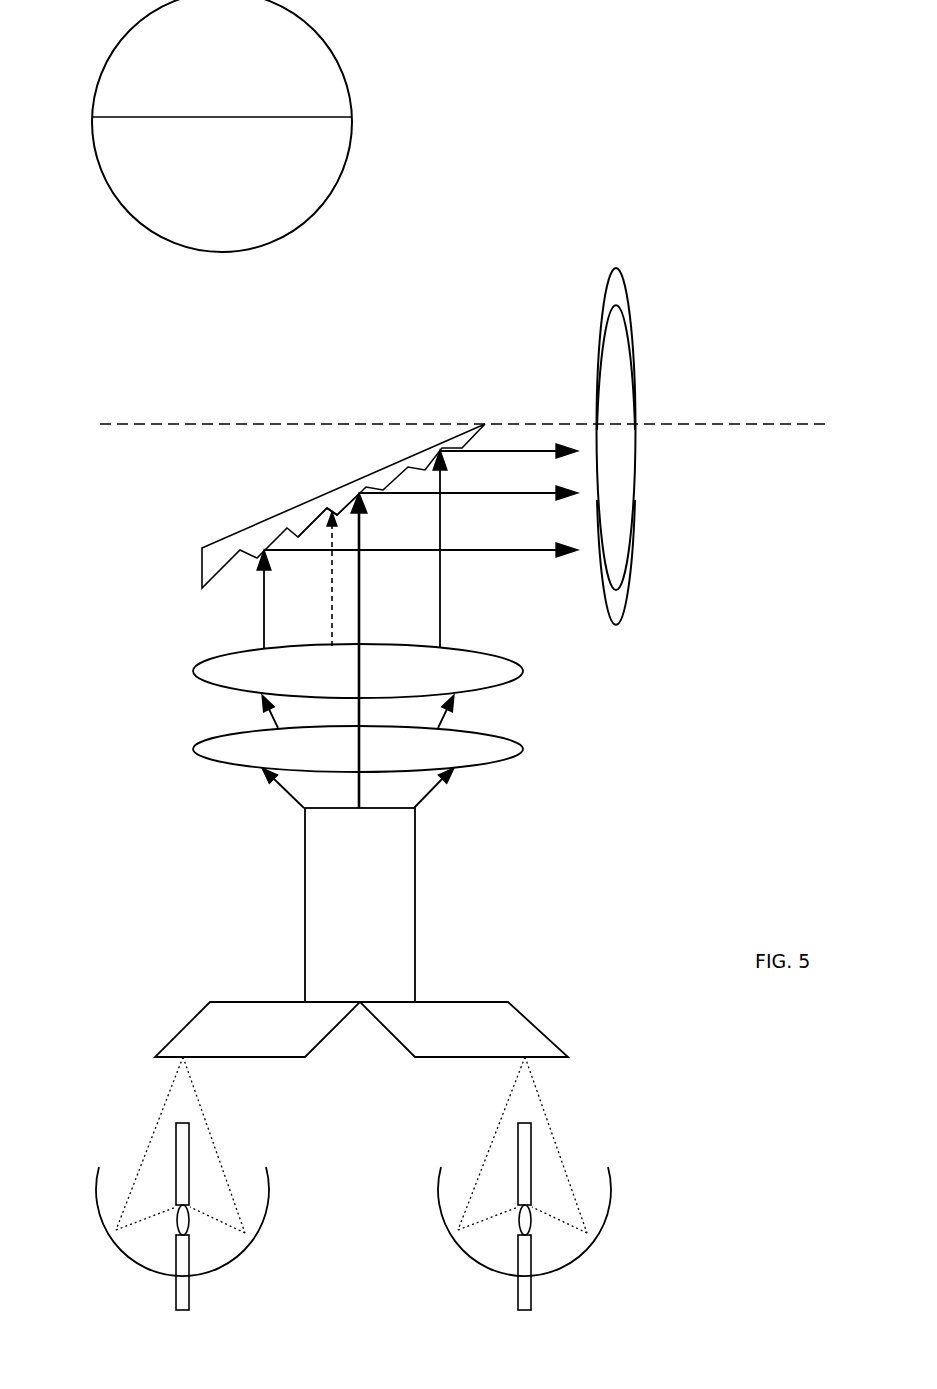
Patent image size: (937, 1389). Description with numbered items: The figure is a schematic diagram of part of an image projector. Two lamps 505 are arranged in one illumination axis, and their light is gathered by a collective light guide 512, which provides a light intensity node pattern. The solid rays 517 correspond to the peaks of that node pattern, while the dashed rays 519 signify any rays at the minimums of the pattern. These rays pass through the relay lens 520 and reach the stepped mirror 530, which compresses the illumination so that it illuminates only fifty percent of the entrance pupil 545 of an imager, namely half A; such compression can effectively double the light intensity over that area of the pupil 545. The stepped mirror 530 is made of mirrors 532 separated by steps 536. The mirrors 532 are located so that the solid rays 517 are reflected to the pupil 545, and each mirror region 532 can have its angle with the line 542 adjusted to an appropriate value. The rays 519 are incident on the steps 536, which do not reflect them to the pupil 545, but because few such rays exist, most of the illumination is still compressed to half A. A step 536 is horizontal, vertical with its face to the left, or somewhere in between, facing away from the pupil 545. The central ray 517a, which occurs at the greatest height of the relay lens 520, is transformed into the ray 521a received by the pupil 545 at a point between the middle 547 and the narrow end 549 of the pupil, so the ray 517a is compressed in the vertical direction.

The lamps 505 is at (150, 1138).
The collective light guide 512 is at (392, 903).
The solid rays 517 is at (440, 597).
The central ray 517a is at (362, 598).
The dashed rays 519 is at (333, 588).
The relay lens 520 is at (525, 677).
The ray 521a is at (470, 495).
The stepped mirror 530 is at (262, 520).
The mirrors 532 is at (350, 502).
The steps 536 is at (333, 510).
The line 542 is at (277, 422).
The entrance pupil 545 is at (615, 268).
The middle 547 is at (622, 420).
The narrow end 549 is at (622, 590).